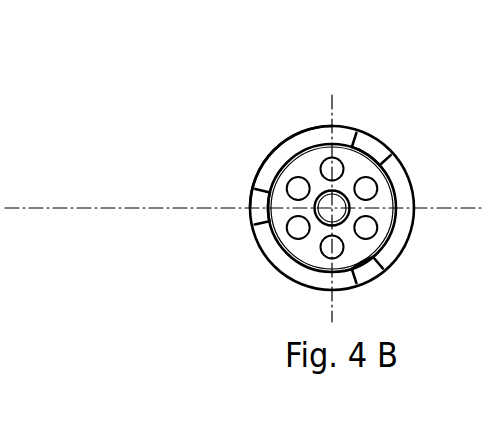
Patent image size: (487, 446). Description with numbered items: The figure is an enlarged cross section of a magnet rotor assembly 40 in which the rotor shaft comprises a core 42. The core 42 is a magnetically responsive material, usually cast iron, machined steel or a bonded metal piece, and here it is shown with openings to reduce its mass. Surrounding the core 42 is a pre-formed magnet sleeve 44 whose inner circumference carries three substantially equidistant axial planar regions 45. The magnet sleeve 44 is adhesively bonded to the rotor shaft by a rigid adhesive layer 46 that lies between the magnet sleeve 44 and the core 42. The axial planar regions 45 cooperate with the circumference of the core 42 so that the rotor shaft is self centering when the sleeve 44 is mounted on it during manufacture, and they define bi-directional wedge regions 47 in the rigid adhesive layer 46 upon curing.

The magnet rotor assembly 40 is at (331, 108).
The core 42 is at (305, 252).
The magnet sleeve 44 is at (290, 150).
The axial planar regions 45 is at (373, 153).
The rigid adhesive layer 46 is at (282, 175).
The bi-directional wedge regions 47 is at (262, 190).